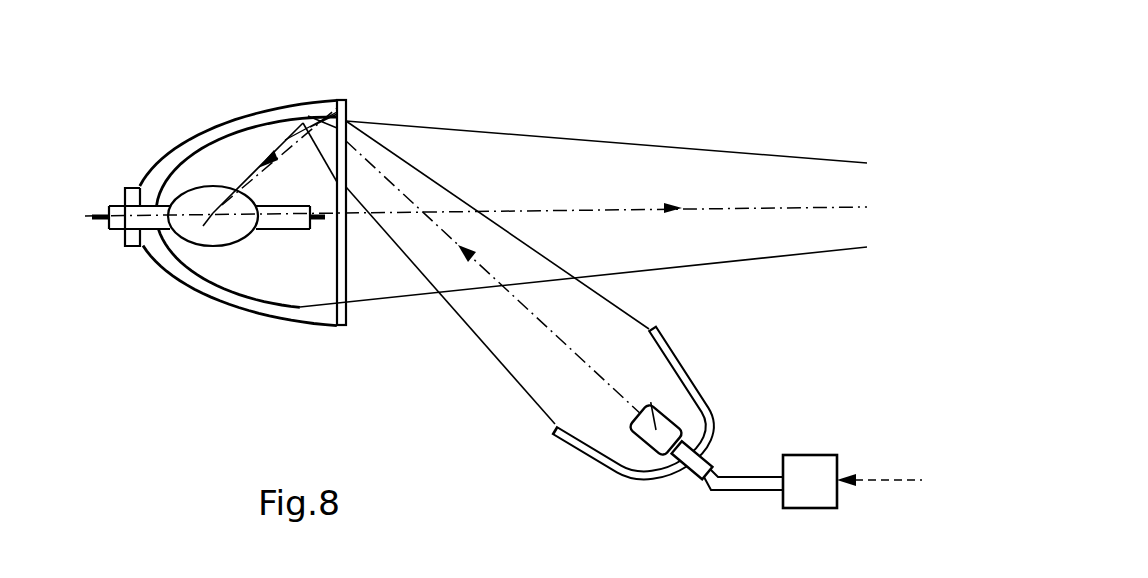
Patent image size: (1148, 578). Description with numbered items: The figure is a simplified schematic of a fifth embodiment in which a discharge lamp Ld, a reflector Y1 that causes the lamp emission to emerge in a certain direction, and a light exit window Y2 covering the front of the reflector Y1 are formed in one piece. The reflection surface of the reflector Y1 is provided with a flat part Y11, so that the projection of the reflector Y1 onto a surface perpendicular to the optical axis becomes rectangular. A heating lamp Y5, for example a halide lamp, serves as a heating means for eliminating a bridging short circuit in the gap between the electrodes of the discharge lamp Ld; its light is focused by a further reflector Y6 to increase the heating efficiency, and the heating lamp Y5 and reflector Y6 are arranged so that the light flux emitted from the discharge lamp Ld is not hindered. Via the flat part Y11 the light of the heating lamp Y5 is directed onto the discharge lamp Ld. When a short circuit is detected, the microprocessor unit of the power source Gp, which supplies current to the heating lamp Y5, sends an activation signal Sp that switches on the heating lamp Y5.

The discharge lamp Ld is at (187, 240).
The reflector Y1 is at (216, 303).
The light exit window Y2 is at (348, 287).
The flat part Y11 is at (283, 120).
The reflector Y6 is at (562, 441).
The heating lamp Y5 is at (644, 443).
The power source for the heating lamp Gp is at (810, 455).
The activation signal Sp is at (888, 480).